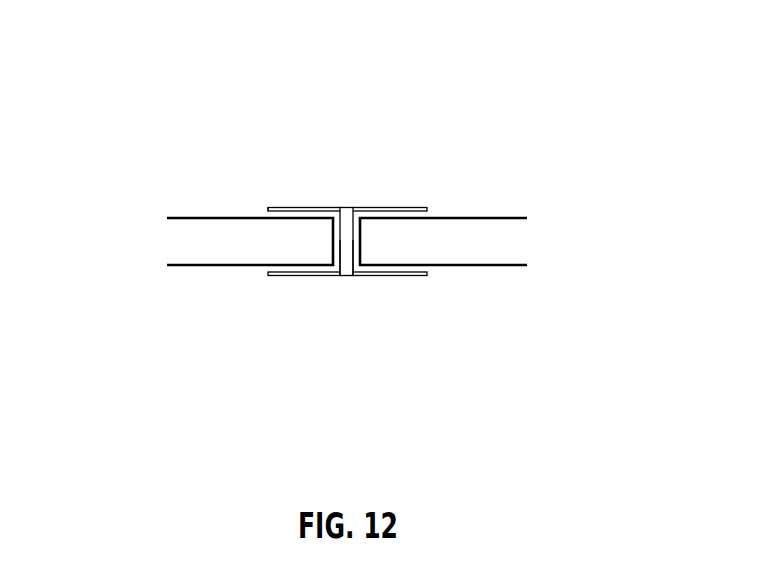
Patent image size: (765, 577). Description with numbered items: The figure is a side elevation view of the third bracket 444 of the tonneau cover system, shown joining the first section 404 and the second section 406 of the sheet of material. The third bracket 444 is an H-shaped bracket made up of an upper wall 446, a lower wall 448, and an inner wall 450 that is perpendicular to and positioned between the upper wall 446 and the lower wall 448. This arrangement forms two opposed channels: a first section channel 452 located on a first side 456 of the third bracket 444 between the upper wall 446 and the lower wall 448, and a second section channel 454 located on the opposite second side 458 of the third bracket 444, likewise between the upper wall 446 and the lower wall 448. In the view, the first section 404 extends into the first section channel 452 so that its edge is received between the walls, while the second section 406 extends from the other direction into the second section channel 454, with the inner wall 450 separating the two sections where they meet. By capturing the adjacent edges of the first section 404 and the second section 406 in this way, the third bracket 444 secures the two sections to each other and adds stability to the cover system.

The first section 404 is at (195, 247).
The second section 406 is at (490, 248).
The third bracket 444 is at (342, 278).
The upper wall 446 is at (283, 207).
The lower wall 448 is at (352, 278).
The inner wall 450 is at (345, 207).
The first section channel 452 is at (267, 272).
The second section channel 454 is at (428, 273).
The first side 456 is at (268, 211).
The second side 458 is at (427, 210).